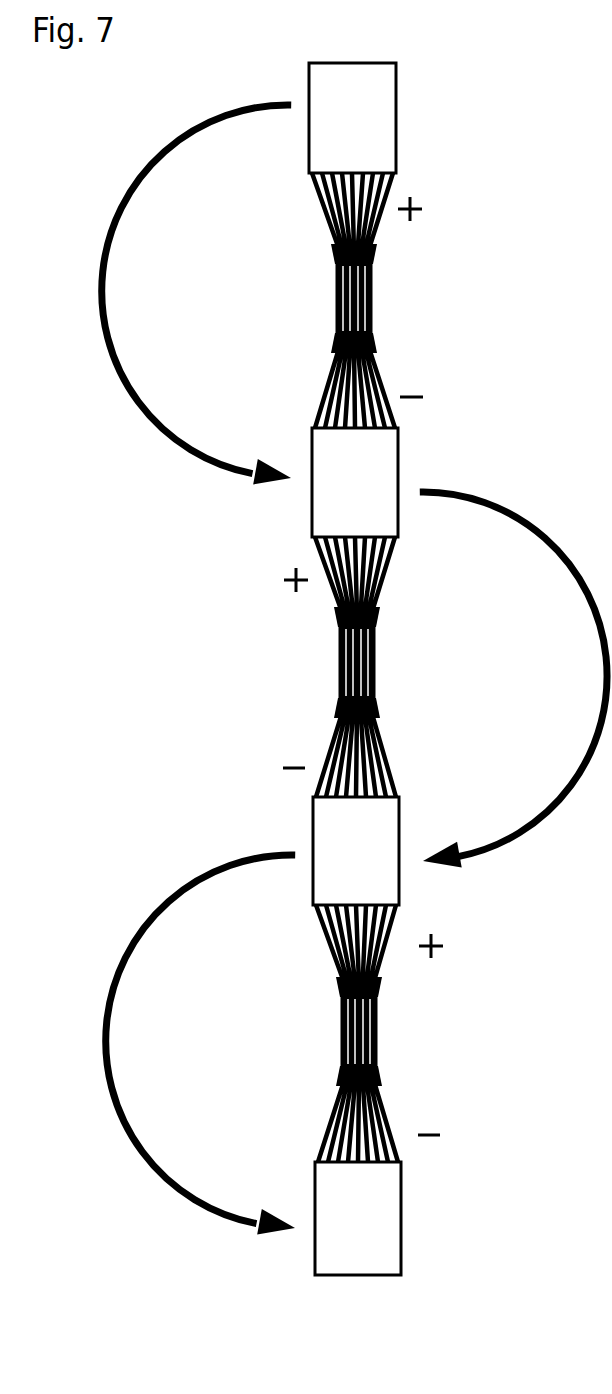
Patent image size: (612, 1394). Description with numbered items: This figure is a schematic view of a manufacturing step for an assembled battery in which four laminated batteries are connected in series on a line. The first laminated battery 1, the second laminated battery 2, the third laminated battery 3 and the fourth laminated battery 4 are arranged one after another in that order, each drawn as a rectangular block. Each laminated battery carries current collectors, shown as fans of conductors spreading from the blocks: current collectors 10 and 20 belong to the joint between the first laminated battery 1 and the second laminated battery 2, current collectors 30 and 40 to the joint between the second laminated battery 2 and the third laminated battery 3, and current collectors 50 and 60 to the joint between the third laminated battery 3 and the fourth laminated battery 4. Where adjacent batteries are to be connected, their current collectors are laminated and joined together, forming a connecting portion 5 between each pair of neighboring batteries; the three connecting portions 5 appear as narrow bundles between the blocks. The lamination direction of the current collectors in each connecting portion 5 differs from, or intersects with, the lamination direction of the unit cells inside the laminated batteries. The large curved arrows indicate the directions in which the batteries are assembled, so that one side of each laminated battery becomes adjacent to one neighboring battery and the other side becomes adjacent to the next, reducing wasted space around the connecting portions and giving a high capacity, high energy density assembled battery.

The first laminated battery 1 is at (397, 97).
The second laminated battery 2 is at (398, 470).
The third laminated battery 3 is at (402, 870).
The fourth laminated battery 4 is at (403, 1217).
The connecting portion 5 is at (373, 304).
The current collector 10 is at (300, 222).
The current collector 20 is at (292, 389).
The current collector 30 is at (427, 583).
The current collector 40 is at (421, 754).
The current collector 50 is at (304, 957).
The current collector 60 is at (295, 1131).